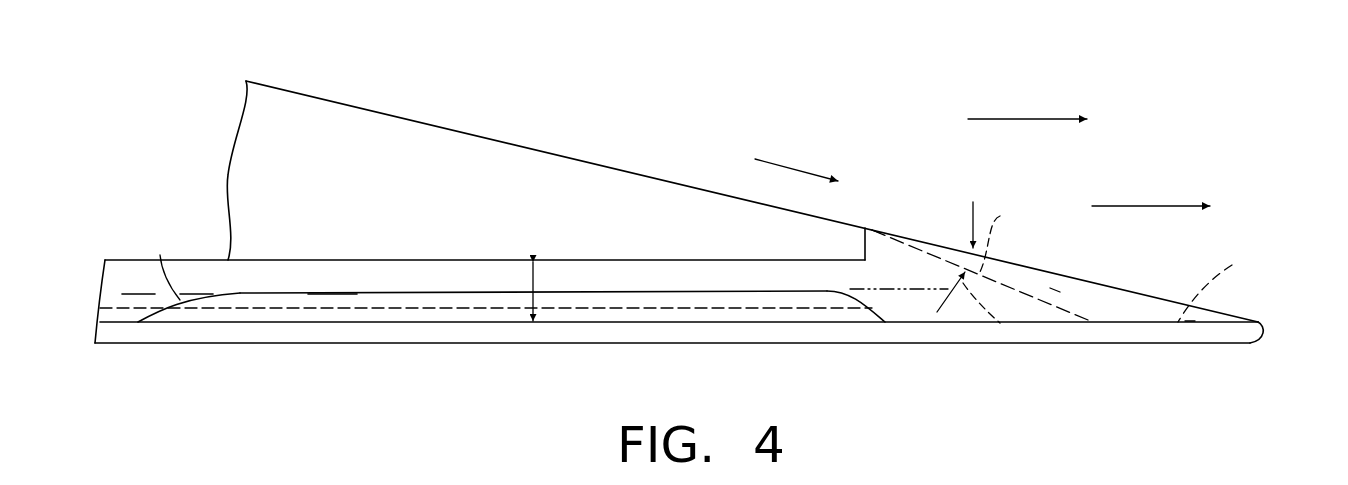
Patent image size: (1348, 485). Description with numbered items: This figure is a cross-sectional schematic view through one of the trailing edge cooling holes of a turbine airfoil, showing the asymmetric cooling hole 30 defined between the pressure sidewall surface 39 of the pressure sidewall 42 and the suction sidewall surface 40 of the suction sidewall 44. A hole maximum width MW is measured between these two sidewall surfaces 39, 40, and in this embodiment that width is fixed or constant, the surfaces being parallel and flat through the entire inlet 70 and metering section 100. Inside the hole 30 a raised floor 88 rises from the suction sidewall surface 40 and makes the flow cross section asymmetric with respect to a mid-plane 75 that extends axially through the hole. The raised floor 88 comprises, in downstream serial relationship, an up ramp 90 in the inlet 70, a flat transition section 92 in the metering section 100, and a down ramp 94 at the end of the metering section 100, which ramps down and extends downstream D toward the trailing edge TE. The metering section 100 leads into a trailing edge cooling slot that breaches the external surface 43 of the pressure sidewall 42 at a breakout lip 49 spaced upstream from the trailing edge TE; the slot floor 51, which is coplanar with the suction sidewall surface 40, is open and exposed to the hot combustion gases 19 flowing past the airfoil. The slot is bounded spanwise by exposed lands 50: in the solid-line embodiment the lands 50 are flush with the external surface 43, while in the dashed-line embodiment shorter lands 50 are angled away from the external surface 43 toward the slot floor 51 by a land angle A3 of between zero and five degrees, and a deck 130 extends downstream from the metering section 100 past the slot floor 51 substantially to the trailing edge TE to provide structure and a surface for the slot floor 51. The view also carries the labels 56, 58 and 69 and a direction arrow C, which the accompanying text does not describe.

The hot combustion gases 19 is at (788, 167).
The cooling hole 30 is at (189, 294).
The pressure sidewall surface 39 is at (400, 260).
The suction sidewall surface 40 is at (697, 322).
The pressure sidewall 42 is at (533, 175).
The external surface 43 is at (643, 175).
The suction sidewall 44 is at (450, 344).
The breakout lip 49 is at (868, 245).
The lands 50 is at (1000, 216).
The slot floor 51 is at (1188, 322).
The flap body 56 is at (1057, 291).
The step 58 is at (866, 230).
The lower surface of noise reducer 69 is at (857, 322).
The inlet 70 is at (138, 281).
The mid-plane 75 is at (763, 308).
The raised floor 88 is at (615, 291).
The up ramp 90 is at (160, 255).
The flat transition section 92 is at (560, 291).
The down ramp 94 is at (851, 290).
The metering section 100 is at (332, 281).
The deck 130 is at (1232, 265).
The hole maximum width MW is at (531, 290).
The land angle A3 is at (973, 204).
The chordwise direction C is at (1012, 118).
The downstream direction D is at (1138, 205).
The trailing edge TE is at (1263, 330).